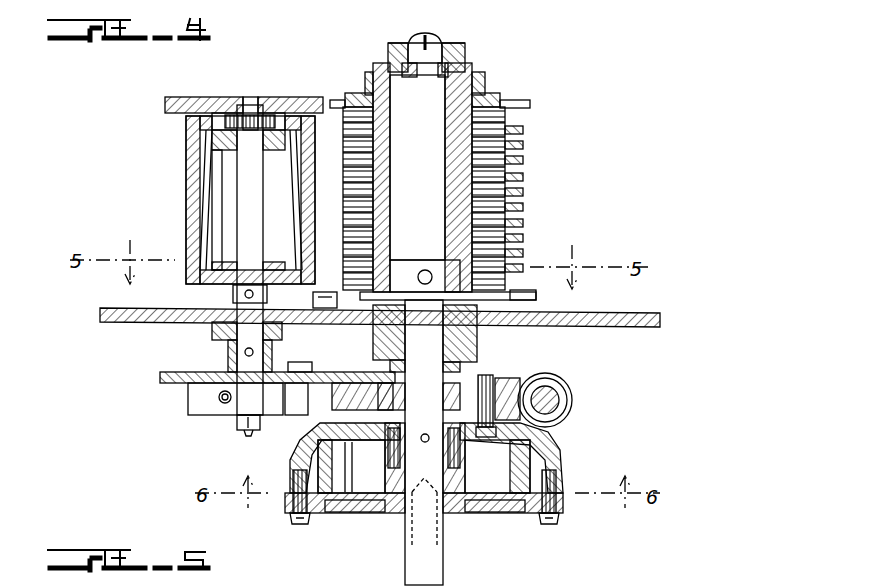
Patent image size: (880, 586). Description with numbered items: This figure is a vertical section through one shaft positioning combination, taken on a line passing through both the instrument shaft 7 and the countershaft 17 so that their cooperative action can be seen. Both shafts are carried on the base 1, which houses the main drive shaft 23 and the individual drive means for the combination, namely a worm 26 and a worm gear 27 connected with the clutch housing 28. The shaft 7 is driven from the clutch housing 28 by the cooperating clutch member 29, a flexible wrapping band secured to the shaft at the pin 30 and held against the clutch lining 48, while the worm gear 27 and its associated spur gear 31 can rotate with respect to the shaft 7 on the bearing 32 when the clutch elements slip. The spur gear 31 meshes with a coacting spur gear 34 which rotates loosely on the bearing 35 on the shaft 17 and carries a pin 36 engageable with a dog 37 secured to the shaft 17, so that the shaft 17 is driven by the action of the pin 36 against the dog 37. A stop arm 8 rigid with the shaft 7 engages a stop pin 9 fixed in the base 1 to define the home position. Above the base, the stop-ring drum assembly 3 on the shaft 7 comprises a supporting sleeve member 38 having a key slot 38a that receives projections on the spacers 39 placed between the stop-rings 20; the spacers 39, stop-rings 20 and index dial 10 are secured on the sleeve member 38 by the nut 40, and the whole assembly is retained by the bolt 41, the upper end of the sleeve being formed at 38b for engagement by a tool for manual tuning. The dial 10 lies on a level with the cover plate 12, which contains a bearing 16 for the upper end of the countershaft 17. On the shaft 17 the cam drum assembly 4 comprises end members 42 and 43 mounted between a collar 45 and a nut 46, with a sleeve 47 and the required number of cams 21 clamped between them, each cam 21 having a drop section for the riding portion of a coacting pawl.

The base 1 is at (106, 322).
The stop-ring drum assembly 3 is at (560, 198).
The cam drum assembly 4 is at (160, 138).
The instrument shaft 7 is at (358, 97).
The stop arm 8 is at (530, 290).
The stop pin 9 is at (314, 312).
The index dial 10 is at (522, 106).
The cover plate 12 is at (182, 97).
The bearing 16 is at (287, 104).
The countershaft 17 is at (263, 97).
The stop-rings 20 is at (523, 139).
The cams 21 is at (186, 193).
The main drive shaft 23 is at (560, 402).
The worm 26 is at (566, 388).
The worm gear 27 is at (522, 382).
The clutch housing 28 is at (558, 453).
The clutch member 29 is at (368, 480).
The pin 30 is at (428, 442).
The spur gear 31 is at (355, 380).
The bearing 32 is at (405, 390).
The spur gear 34 is at (175, 372).
The bearing 35 is at (230, 347).
The pin 36 is at (295, 412).
The dog 37 is at (200, 408).
The sleeve member 38 is at (485, 76).
The key slot 38a is at (460, 188).
The formed upper end 38b is at (470, 55).
The spacers 39 is at (525, 163).
The nut 40 is at (500, 97).
The bolt 41 is at (416, 46).
The end member 42 is at (205, 237).
The end member 43 is at (200, 171).
The collar 45 is at (233, 297).
The nut 46 is at (248, 118).
The sleeve 47 is at (296, 250).
The clutch lining 48 is at (312, 522).